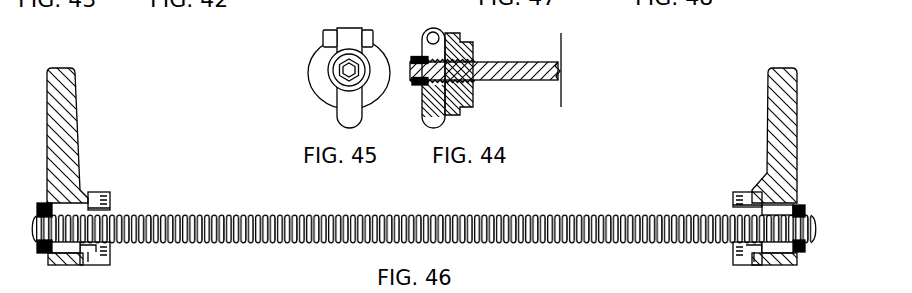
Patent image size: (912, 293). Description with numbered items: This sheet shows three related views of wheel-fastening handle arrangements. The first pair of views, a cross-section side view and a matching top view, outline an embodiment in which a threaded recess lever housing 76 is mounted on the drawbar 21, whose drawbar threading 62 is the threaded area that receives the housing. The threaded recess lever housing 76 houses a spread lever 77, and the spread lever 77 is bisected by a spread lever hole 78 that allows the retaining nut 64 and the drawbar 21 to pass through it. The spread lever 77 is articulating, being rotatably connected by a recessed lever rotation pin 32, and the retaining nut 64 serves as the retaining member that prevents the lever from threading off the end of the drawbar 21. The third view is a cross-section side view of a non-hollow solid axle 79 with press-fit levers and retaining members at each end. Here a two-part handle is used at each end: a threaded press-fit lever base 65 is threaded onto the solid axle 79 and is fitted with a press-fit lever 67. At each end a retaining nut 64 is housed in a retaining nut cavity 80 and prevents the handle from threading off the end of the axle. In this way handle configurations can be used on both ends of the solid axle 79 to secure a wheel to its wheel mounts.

In FIG. 44, the drawbar 21 is at (525, 64).
In FIG. 45, the recessed lever rotation pin 32 is at (368, 35).
In FIG. 44, the recessed lever rotation pin 32 is at (437, 33).
In FIG. 44, the drawbar threading 62 is at (481, 64).
In FIG. 45, the retaining nut 64 is at (340, 63).
In FIG. 44, the retaining nut 64 is at (413, 56).
In FIG. 46, the retaining nut 64 is at (38, 256).
In FIG. 46, the threaded press-fit lever base 65 is at (110, 200).
In FIG. 46, the press-fit lever 67 is at (70, 147).
In FIG. 44, the threaded recess lever housing 76 is at (474, 99).
In FIG. 45, the spread lever 77 is at (347, 118).
In FIG. 44, the spread lever 77 is at (432, 114).
In FIG. 45, the spread lever hole 78 is at (335, 72).
In FIG. 44, the spread lever hole 78 is at (433, 88).
In FIG. 46, the solid axle 79 is at (400, 228).
In FIG. 46, the retaining nut cavity 80 is at (68, 266).